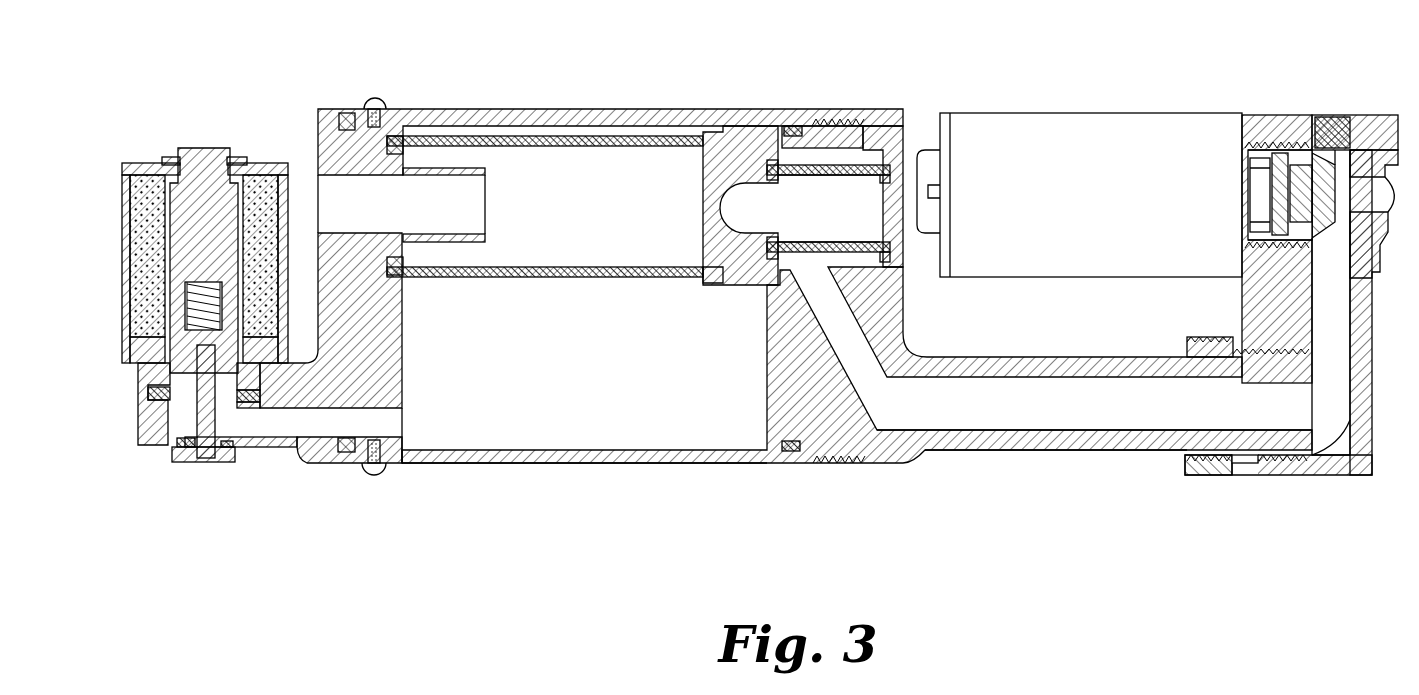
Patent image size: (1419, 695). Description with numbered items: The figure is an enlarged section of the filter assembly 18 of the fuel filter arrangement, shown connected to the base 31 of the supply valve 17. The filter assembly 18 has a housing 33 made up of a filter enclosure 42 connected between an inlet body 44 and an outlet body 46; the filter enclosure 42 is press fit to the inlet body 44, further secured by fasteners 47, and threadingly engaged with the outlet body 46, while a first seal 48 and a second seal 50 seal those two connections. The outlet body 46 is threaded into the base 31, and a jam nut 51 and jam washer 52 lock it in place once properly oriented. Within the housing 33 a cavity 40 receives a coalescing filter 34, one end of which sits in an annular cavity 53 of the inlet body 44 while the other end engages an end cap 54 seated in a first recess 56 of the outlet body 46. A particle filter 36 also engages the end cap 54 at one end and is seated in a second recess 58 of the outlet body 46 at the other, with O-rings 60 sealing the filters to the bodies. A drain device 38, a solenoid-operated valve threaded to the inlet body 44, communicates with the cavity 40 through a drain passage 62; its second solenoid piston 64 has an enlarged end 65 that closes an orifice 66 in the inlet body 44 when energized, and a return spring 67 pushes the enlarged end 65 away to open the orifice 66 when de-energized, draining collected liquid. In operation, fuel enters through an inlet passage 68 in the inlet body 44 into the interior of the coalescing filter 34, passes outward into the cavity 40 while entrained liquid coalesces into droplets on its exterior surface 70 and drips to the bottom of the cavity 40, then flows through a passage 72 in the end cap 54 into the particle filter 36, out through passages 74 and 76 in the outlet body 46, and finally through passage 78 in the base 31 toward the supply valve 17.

The supply valve 17 is at (1062, 113).
The filter assembly 18 is at (842, 523).
The base 31 is at (1335, 475).
The housing 33 is at (500, 464).
The coalescing filter 34 is at (545, 136).
The particle filter 36 is at (840, 172).
The drain device 38 is at (153, 165).
The cavity 40 is at (732, 418).
The filter enclosure 42 is at (612, 464).
The inlet body 44 is at (318, 109).
The outlet body 46 is at (905, 460).
The fasteners 47 is at (376, 99).
The first seal 48 is at (352, 112).
The second seal 50 is at (794, 126).
The jam nut 51 is at (1212, 475).
The jam washer 52 is at (1233, 475).
The annular cavity 53 is at (403, 274).
The end cap 54 is at (715, 132).
The first recess 56 is at (742, 270).
The second recess 58 is at (860, 168).
The O-rings 60 is at (403, 122).
The drain passage 62 is at (300, 437).
The second solenoid piston 64 is at (195, 402).
The enlarged end 65 is at (217, 462).
The orifice 66 is at (205, 457).
The return spring 67 is at (150, 273).
The inlet passage 68 is at (345, 185).
The exterior surface 70 is at (497, 126).
The passage 72 is at (758, 165).
The passage 74 is at (895, 330).
The passage 76 is at (1010, 392).
The passage 78 is at (1309, 457).